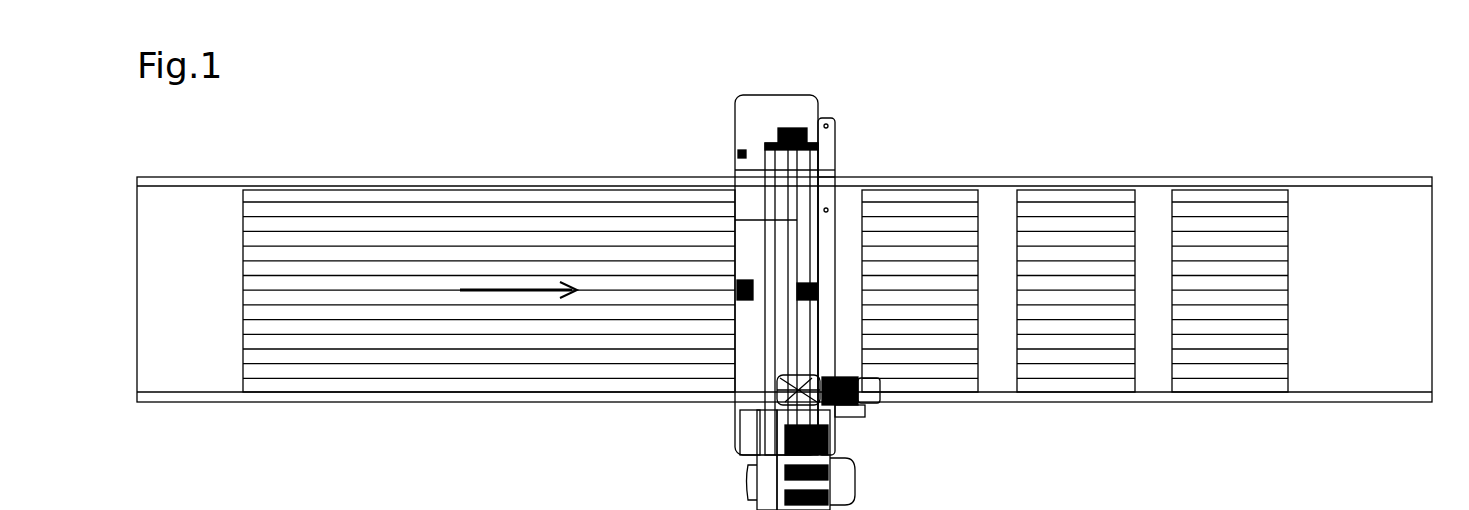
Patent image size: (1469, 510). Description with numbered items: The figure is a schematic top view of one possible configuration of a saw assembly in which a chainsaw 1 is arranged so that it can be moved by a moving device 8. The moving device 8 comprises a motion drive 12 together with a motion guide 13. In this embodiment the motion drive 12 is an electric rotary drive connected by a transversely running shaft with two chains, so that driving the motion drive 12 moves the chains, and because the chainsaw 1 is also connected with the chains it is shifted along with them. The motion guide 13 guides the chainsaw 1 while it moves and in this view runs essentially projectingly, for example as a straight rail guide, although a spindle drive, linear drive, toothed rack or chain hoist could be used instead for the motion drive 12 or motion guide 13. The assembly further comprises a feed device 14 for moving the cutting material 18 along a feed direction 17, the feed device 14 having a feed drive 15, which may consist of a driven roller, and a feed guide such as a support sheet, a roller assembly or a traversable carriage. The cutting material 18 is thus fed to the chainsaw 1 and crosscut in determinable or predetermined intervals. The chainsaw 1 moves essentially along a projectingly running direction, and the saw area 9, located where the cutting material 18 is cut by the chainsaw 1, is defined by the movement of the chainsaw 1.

The chainsaw 1 is at (826, 302).
The moving device 8 is at (730, 118).
The saw area 9 is at (775, 245).
The motion drive 12 is at (870, 405).
The motion guide 13 is at (836, 130).
The feed device 14 is at (784, 294).
The feed drive 15 is at (784, 441).
The feed direction 17 is at (521, 288).
The cutting material 18 is at (437, 202).